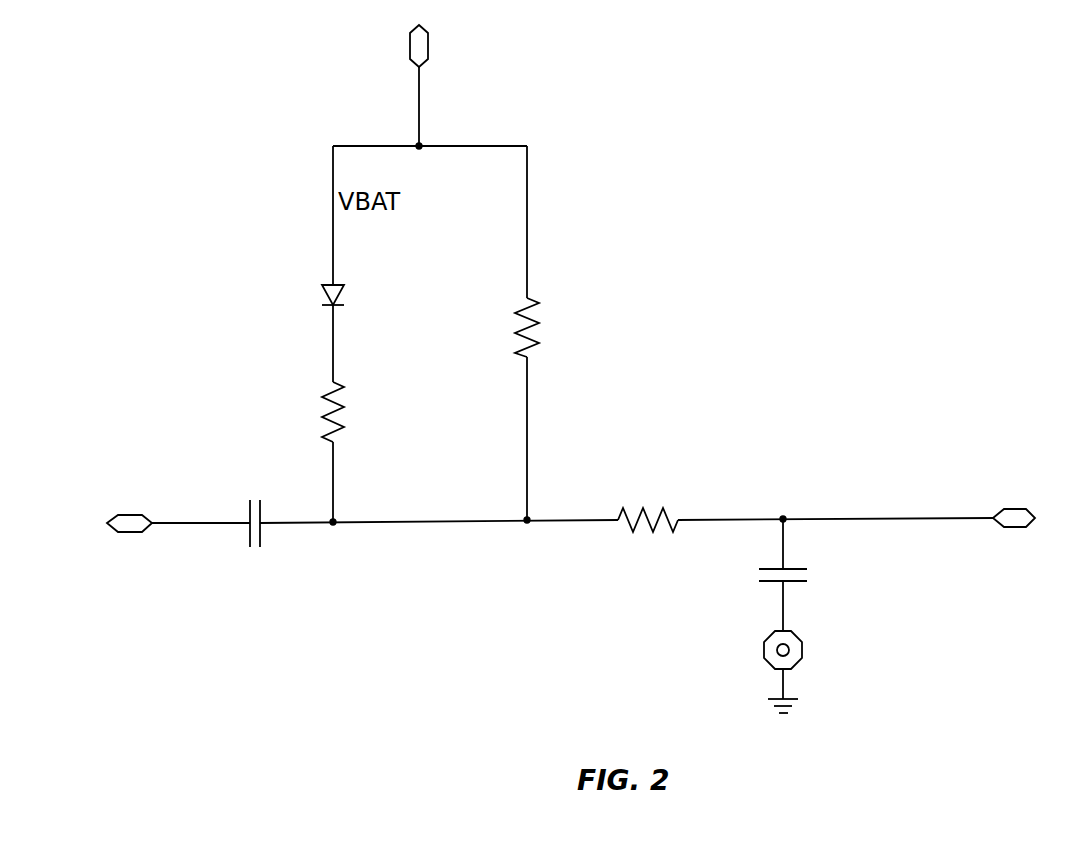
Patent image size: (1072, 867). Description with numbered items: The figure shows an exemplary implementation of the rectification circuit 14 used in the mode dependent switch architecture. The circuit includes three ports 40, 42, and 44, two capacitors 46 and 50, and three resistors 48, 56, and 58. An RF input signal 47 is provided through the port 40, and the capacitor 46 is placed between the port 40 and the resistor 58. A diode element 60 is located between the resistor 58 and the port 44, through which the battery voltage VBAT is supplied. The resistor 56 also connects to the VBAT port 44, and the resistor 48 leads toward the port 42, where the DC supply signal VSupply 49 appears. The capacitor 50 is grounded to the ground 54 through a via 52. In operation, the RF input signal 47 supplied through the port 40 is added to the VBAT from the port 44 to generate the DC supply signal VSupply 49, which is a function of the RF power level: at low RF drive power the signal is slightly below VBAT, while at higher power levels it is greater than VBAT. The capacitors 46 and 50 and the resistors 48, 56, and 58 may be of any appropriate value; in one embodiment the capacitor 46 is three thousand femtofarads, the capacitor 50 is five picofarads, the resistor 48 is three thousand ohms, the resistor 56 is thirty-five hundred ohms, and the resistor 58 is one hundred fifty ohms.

The rectification circuit 14 is at (215, 185).
The port 40 is at (120, 535).
The port 42 is at (1012, 508).
The port 44 is at (430, 46).
The capacitor 46 is at (255, 552).
The RF input signal 47 is at (188, 490).
The resistor 48 is at (650, 508).
The VSupply 49 is at (887, 484).
The capacitor 50 is at (757, 577).
The via 52 is at (797, 663).
The ground 54 is at (792, 710).
The resistor 56 is at (542, 312).
The resistor 58 is at (326, 405).
The diode element 60 is at (320, 296).